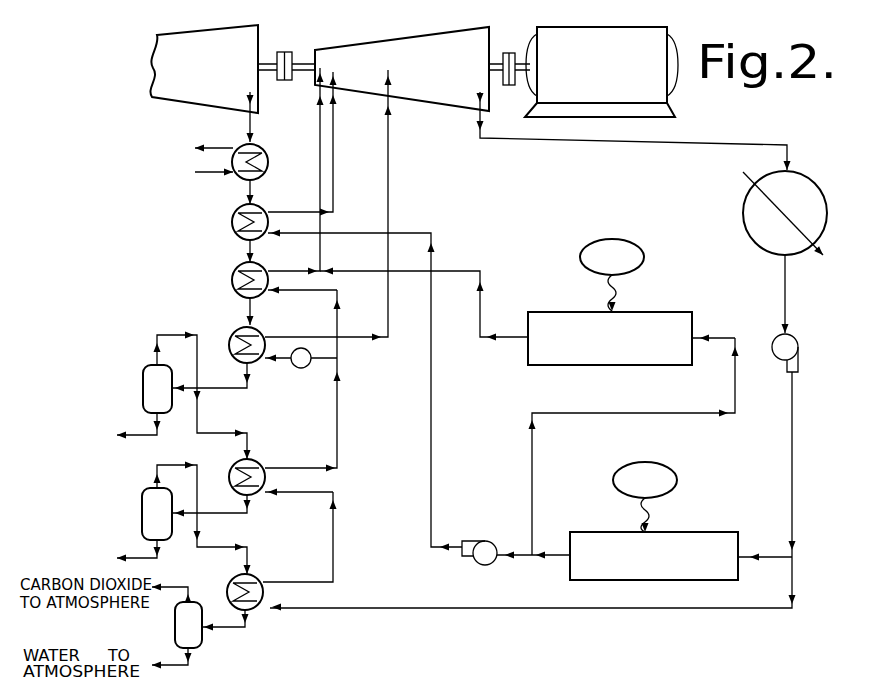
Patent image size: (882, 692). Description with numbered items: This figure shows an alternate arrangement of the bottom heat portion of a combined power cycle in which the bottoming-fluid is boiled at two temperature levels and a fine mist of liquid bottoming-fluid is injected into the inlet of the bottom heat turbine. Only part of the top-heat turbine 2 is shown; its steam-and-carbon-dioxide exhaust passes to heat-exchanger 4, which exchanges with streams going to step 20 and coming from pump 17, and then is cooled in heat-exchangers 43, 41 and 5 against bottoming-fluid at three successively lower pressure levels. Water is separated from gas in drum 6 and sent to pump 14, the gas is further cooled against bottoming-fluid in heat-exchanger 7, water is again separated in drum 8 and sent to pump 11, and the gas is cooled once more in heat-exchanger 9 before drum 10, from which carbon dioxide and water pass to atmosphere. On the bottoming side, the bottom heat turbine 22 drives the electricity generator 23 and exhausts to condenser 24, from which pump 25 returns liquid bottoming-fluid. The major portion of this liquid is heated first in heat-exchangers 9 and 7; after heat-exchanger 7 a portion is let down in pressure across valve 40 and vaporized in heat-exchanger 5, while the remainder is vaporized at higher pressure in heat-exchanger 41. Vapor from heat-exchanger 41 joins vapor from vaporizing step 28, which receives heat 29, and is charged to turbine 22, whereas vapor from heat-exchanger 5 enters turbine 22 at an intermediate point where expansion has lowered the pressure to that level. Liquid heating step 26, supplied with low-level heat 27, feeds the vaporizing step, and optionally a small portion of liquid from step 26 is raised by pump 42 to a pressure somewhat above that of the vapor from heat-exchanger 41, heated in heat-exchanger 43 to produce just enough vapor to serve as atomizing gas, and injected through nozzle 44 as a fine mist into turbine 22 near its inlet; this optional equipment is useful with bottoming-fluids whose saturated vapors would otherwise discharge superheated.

The turbine 2 is at (213, 79).
The bottom heat turbine 22 is at (451, 72).
The electricity generator 23 is at (614, 77).
The nozzle 44 is at (337, 78).
The heat-exchanger 4 is at (239, 148).
The heat-exchanger 43 is at (235, 218).
The heat-exchanger 41 is at (233, 277).
The heat-exchanger 5 is at (231, 340).
The valve 40 is at (298, 368).
The drum 6 is at (163, 398).
The heat-exchanger 7 is at (257, 464).
The drum 8 is at (163, 523).
The heat-exchanger 9 is at (254, 572).
The drum 10 is at (197, 634).
The condenser 24 is at (810, 184).
The pump 25 is at (797, 340).
The heating step 26 is at (698, 533).
The low-level heat 27 is at (678, 477).
The vaporizing step 28 is at (659, 313).
The heat 29 is at (638, 250).
The pump 42 is at (485, 541).
The step 20 is at (149, 147).
The pump 17 is at (144, 172).
The pump 14 is at (72, 435).
The pump 11 is at (72, 559).